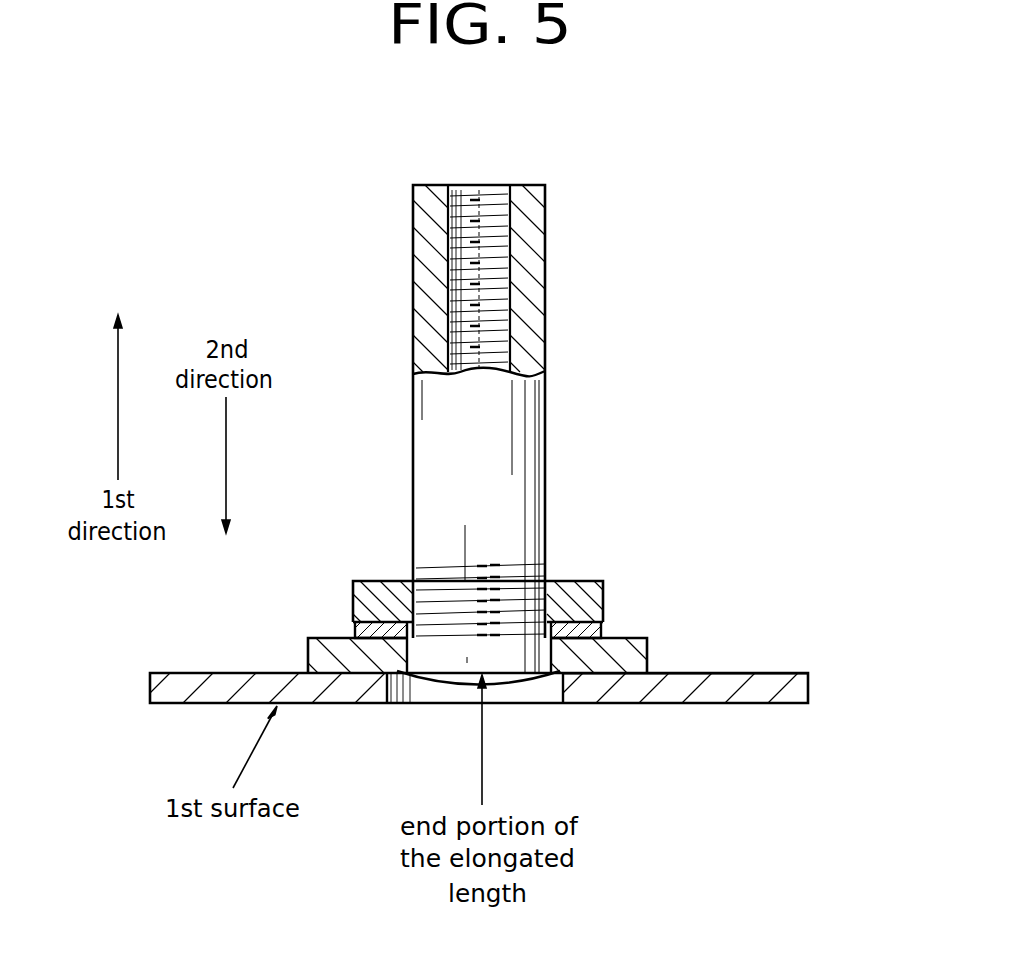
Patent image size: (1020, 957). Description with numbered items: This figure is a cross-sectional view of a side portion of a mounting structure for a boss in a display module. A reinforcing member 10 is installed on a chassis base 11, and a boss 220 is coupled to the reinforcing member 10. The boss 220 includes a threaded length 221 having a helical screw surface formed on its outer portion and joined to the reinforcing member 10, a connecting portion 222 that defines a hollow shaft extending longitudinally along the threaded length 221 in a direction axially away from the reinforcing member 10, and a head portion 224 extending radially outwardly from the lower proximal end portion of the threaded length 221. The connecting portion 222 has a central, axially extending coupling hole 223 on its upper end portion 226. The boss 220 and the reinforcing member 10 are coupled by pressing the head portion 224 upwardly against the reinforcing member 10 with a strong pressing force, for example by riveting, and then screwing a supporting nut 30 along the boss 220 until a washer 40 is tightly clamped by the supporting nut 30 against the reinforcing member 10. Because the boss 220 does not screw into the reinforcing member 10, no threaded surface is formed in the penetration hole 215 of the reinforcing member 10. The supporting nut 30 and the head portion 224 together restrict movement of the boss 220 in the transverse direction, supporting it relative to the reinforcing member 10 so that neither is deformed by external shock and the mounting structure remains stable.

The reinforcing member 10 is at (489, 679).
The chassis base 11 is at (776, 688).
The supporting nut 30 is at (604, 580).
The washer 40 is at (605, 627).
The penetration hole 215 is at (433, 650).
The boss 220 is at (490, 435).
The threaded length 221 is at (546, 563).
The connecting portion 222 is at (546, 443).
The coupling hole 223 is at (495, 185).
The head portion 224 is at (517, 677).
The upper end portion 226 is at (423, 278).